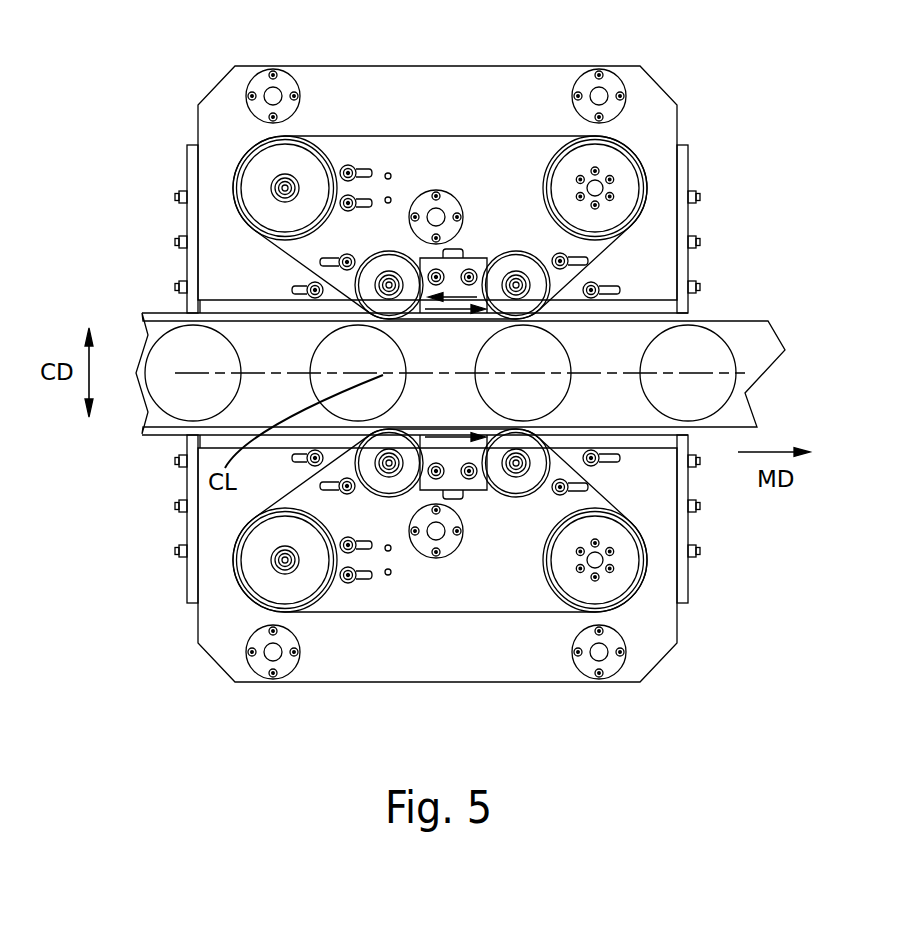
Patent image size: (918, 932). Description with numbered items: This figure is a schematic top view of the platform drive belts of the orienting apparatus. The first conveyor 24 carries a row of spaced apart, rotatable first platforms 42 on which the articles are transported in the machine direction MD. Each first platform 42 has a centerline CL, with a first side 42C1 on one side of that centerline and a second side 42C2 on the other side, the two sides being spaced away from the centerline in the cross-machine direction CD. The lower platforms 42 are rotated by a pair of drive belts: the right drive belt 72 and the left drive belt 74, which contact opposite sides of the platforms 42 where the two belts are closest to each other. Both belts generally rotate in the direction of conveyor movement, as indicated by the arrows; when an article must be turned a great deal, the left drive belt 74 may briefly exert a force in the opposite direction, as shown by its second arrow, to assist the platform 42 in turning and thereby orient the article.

The first conveyor 24 is at (136, 451).
The first platform 42 is at (327, 382).
The first side 42C1 is at (462, 583).
The second side 42C2 is at (462, 167).
The right drive belt 72 is at (510, 612).
The left drive belt 74 is at (505, 136).